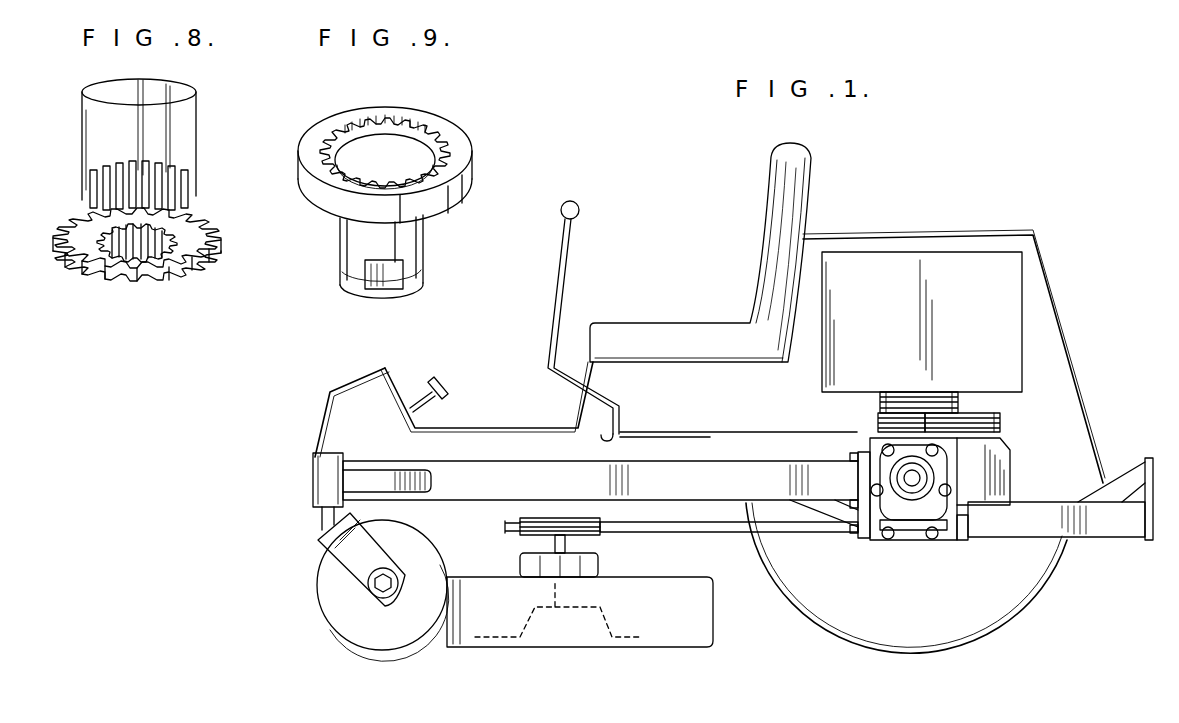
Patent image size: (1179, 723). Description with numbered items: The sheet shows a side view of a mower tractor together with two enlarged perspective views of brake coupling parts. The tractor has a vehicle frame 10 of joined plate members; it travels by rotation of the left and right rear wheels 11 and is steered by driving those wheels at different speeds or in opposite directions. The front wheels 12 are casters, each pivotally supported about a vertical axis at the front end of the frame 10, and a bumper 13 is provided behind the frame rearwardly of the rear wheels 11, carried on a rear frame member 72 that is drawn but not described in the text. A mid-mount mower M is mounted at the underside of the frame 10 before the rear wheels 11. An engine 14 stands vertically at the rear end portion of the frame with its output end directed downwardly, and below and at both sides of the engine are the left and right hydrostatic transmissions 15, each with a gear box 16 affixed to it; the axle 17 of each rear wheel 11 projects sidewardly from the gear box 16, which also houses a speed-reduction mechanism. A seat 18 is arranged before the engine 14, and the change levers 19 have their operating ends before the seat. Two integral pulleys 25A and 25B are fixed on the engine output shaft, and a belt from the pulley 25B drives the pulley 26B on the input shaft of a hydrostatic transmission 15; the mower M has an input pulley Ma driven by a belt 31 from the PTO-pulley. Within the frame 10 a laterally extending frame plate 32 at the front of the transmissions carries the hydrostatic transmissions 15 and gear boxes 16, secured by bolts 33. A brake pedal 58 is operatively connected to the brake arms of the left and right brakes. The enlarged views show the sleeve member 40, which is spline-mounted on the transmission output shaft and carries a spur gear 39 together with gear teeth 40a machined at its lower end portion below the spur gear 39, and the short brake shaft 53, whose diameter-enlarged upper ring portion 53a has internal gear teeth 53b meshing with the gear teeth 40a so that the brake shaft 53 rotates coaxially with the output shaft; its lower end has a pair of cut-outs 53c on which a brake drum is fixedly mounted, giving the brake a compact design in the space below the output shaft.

In FIG. 1, the vehicle frame 10 is at (782, 483).
In FIG. 1, the rear wheels 11 is at (865, 628).
In FIG. 1, the front wheels 12 is at (362, 635).
In FIG. 1, the bumper 13 is at (1147, 545).
In FIG. 1, the engine 14 is at (963, 275).
In FIG. 1, the hydrostatic transmission 15 is at (990, 468).
In FIG. 1, the gear box 16 is at (931, 511).
In FIG. 1, the axle 17 is at (925, 485).
In FIG. 1, the seat 18 is at (778, 212).
In FIG. 1, the change levers 19 is at (580, 208).
In FIG. 1, the pulley 25A is at (935, 392).
In FIG. 1, the pulley 25B is at (880, 414).
In FIG. 1, the pulley 26B is at (985, 418).
In FIG. 1, the belt 31 is at (712, 527).
In FIG. 1, the frame plate 32 is at (866, 452).
In FIG. 1, the bolts 33 is at (858, 507).
In FIG. 8, the spur gear 39 is at (96, 195).
In FIG. 8, the sleeve member 40 is at (163, 222).
In FIG. 8, the gear teeth 40a is at (208, 245).
In FIG. 9, the brake shaft 53 is at (417, 197).
In FIG. 9, the upper ring portion 53a is at (452, 190).
In FIG. 9, the internal gear teeth 53b is at (410, 125).
In FIG. 9, the cut-outs 53c is at (398, 283).
In FIG. 1, the brake pedal 58 is at (445, 395).
In FIG. 1, the rear frame rail 72 is at (1045, 512).
In FIG. 1, the mid-mount mower M is at (690, 630).
In FIG. 1, the input pulley Ma is at (538, 518).